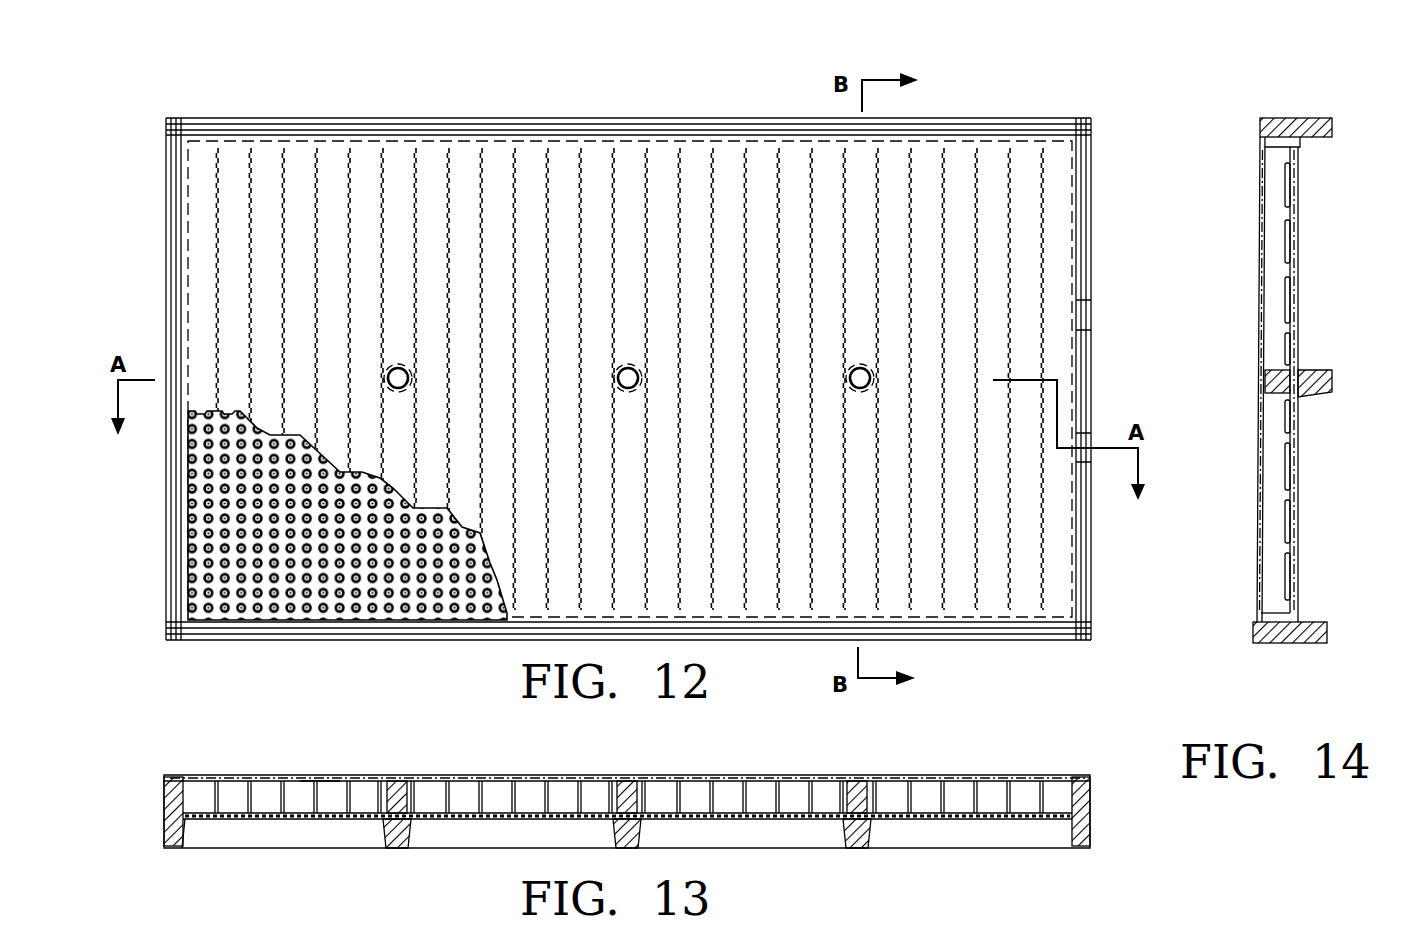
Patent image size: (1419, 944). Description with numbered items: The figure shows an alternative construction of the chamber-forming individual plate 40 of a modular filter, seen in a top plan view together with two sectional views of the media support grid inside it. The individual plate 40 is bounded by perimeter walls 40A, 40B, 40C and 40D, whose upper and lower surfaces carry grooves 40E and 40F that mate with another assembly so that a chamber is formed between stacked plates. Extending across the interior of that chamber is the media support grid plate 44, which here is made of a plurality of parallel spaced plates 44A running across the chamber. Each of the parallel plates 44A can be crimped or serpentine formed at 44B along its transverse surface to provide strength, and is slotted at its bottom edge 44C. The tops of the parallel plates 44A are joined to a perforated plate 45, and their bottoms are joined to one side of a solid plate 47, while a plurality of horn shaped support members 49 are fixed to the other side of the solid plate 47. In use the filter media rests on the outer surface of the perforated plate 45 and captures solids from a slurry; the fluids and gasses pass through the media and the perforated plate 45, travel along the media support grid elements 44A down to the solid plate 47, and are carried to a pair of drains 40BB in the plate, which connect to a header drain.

In FIG. 12, the individual plate 40 is at (649, 387).
In FIG. 12, the perimeter wall 40A is at (335, 118).
In FIG. 14, the perimeter wall 40A is at (1287, 118).
In FIG. 12, the perimeter wall 40B is at (1093, 208).
In FIG. 12, the drain 40BB is at (1093, 300).
In FIG. 13, the drain 40BB is at (1092, 808).
In FIG. 12, the perimeter wall 40C is at (1000, 641).
In FIG. 14, the perimeter wall 40C is at (1285, 645).
In FIG. 12, the perimeter wall 40D is at (163, 505).
In FIG. 14, the groove 40E is at (1262, 128).
In FIG. 14, the groove 40F is at (1332, 128).
In FIG. 12, the media support grid plate 44 is at (629, 339).
In FIG. 12, the parallel spaced plate 44A is at (746, 170).
In FIG. 13, the parallel spaced plate 44A is at (477, 788).
In FIG. 14, the parallel spaced plate 44A is at (1272, 243).
In FIG. 12, the crimped or serpentine formation 44B is at (979, 177).
In FIG. 14, the slotted bottom edge 44C is at (1298, 298).
In FIG. 12, the perforated plate 45 is at (250, 606).
In FIG. 13, the perforated plate 45 is at (763, 776).
In FIG. 14, the perforated plate 45 is at (1257, 482).
In FIG. 13, the solid plate 47 is at (793, 820).
In FIG. 14, the solid plate 47 is at (1298, 508).
In FIG. 13, the horn shaped support member 49 is at (874, 820).